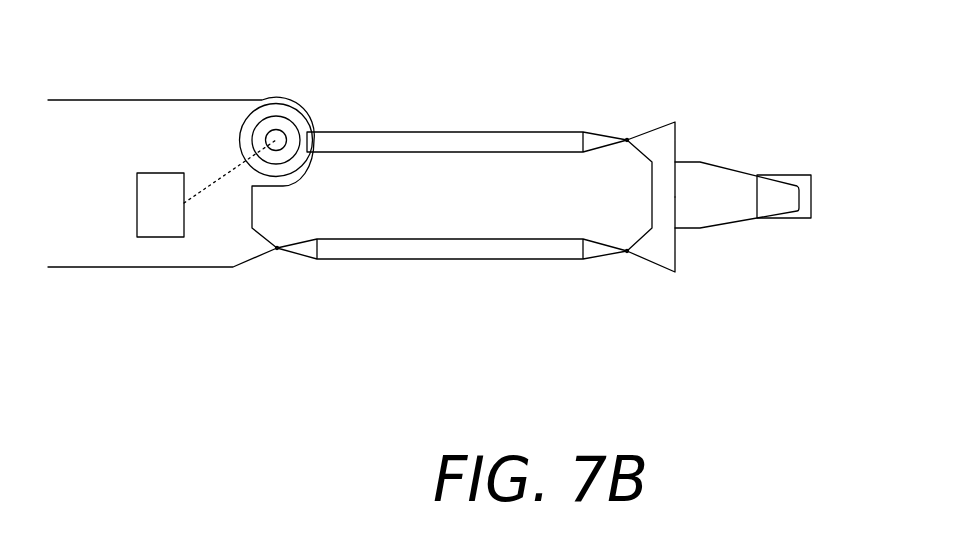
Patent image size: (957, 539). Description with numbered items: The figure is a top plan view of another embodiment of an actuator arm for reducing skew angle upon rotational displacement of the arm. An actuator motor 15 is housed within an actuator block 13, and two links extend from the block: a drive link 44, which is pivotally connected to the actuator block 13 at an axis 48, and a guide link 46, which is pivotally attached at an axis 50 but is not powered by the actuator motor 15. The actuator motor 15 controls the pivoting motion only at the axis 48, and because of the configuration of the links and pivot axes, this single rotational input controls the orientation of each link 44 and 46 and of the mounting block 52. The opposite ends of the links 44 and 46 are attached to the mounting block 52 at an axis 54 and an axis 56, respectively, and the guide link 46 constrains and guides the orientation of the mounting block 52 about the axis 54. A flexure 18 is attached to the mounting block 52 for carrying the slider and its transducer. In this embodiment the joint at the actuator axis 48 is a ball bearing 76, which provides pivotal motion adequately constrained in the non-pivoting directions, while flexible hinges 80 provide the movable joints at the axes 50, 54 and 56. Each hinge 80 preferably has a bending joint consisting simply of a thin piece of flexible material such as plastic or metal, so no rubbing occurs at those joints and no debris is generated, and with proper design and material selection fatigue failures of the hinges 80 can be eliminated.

The actuator block 13 is at (122, 122).
The actuator motor 15 is at (150, 213).
The flexure 18 is at (811, 192).
The drive link 44 is at (457, 142).
The guide link 46 is at (452, 250).
The axis 48 is at (268, 135).
The axis 50 is at (277, 248).
The mounting block 52 is at (715, 187).
The axis 54 is at (628, 140).
The axis 56 is at (626, 252).
The ball bearing 76 is at (263, 123).
The flexible hinges 80 is at (625, 140).